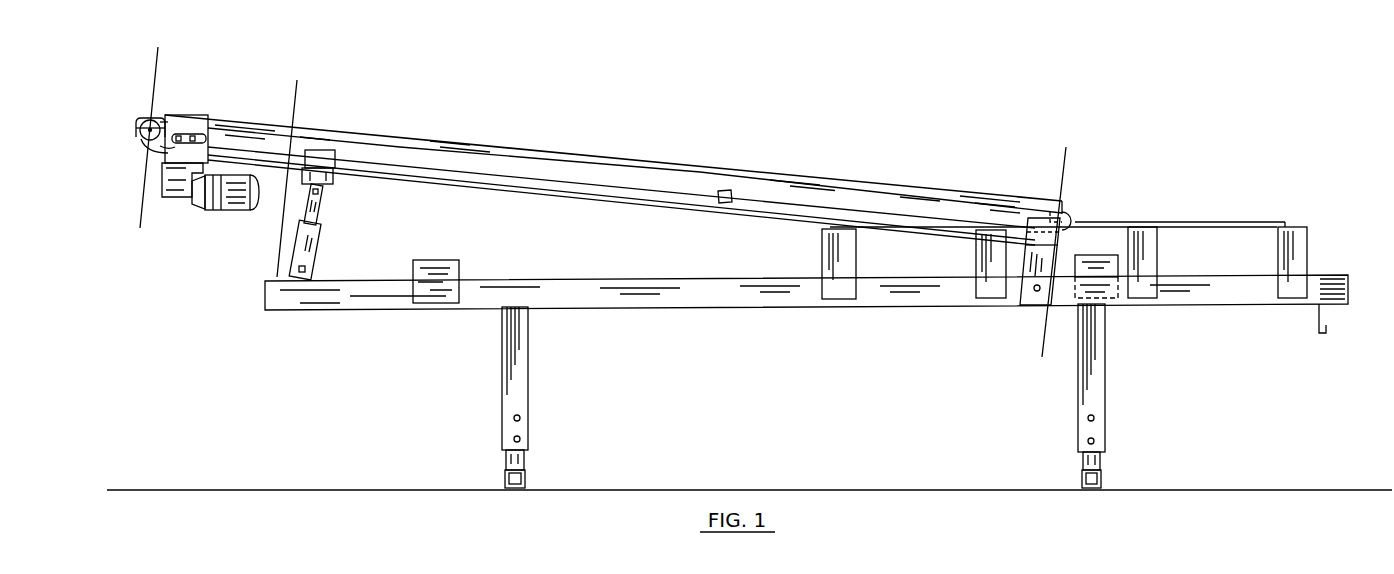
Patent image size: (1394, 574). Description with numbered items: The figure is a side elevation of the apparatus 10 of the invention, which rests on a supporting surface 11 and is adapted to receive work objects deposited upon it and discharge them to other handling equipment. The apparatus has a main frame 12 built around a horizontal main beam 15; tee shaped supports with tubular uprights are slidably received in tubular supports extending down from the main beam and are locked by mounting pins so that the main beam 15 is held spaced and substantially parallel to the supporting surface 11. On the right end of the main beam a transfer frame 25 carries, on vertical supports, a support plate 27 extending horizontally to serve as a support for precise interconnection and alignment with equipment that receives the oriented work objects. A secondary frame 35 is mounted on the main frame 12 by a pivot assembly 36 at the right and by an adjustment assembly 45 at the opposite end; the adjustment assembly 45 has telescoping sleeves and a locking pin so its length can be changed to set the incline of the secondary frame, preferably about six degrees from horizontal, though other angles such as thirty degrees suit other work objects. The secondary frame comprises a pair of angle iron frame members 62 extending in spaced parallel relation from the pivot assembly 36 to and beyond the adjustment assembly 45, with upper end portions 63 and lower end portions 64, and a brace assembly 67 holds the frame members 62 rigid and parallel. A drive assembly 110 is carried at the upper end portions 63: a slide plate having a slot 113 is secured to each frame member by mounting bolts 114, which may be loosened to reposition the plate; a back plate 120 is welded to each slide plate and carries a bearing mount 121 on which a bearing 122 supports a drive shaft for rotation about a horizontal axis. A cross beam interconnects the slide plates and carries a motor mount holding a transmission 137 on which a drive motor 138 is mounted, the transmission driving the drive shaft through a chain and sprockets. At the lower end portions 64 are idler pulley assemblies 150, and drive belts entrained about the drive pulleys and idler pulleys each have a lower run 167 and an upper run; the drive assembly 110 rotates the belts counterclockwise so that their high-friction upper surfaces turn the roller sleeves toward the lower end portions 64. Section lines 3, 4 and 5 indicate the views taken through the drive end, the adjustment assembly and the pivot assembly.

The section line 3- 3 is at (150, 58).
The section line 4- 4 is at (287, 95).
The section line 5- 5 is at (1075, 163).
The apparatus 10 is at (613, 160).
The supporting surface 11 is at (282, 489).
The main frame 12 is at (806, 381).
The main beam 15 is at (727, 294).
The transfer frame 25 is at (1072, 225).
The support plate 27 is at (1250, 222).
The secondary frame 35 is at (424, 128).
The pivot assembly 36 is at (1029, 301).
The adjustment assembly 45 is at (312, 243).
The angle iron frame member 62 is at (783, 188).
The upper end portion 63 is at (226, 135).
The lower end portion 64 is at (1018, 210).
The brace assembly 67 is at (717, 199).
The drive assembly 110 is at (171, 160).
The slot 113 is at (187, 135).
The mounting bolt 114 is at (176, 146).
The back plate 120 is at (150, 119).
The bearing mount 121 is at (141, 126).
The bearing 122 is at (140, 139).
The transmission 137 is at (186, 180).
The drive motor 138 is at (228, 197).
The idler pulley assembly 150 is at (1068, 218).
The lower run 167 is at (618, 207).